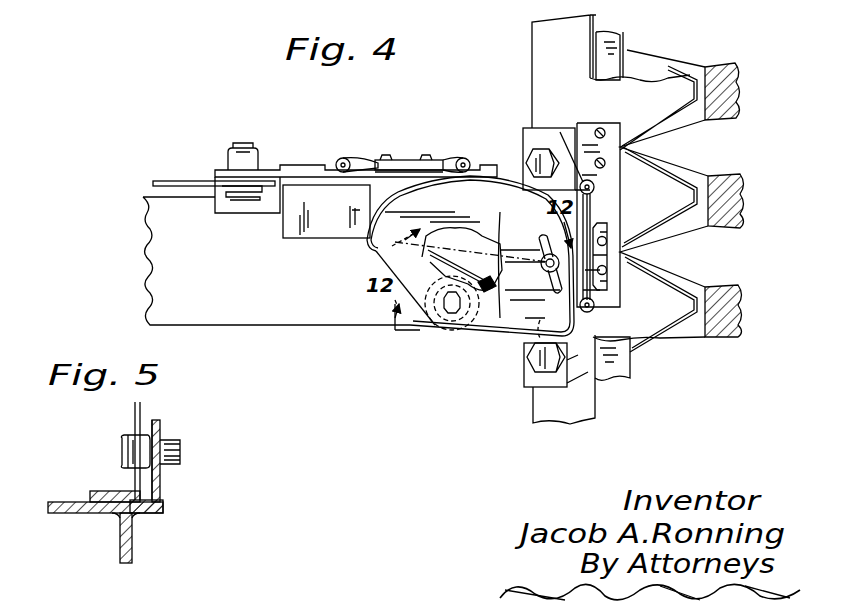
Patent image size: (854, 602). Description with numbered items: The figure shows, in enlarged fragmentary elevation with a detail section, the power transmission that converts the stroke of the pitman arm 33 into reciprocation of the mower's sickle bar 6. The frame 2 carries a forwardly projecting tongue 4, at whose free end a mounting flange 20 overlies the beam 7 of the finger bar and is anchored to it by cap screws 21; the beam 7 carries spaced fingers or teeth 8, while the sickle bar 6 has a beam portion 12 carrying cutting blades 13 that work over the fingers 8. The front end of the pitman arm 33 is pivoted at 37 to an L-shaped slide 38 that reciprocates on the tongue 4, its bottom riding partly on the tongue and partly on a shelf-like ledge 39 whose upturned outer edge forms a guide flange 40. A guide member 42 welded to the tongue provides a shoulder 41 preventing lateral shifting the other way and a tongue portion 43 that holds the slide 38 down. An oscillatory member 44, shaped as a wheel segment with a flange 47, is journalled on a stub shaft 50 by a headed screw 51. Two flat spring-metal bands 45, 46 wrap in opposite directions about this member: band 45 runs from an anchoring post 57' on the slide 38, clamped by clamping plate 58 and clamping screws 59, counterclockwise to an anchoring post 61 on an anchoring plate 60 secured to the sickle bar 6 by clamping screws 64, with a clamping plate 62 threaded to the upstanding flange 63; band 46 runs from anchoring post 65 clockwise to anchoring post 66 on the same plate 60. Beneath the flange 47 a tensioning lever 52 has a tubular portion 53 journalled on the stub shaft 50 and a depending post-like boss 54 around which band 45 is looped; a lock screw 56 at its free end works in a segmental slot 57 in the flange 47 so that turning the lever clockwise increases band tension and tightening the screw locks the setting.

In FIG. 5, the frame 2 is at (52, 513).
In FIG. 4, the frame tongue 4 is at (282, 298).
In FIG. 5, the frame tongue 4 is at (108, 505).
In FIG. 4, the sickle bar 6 is at (687, 68).
In FIG. 4, the beam 7 is at (546, 38).
In FIG. 4, the fingers or teeth 8 is at (737, 78).
In FIG. 4, the beam portion 12 is at (650, 392).
In FIG. 4, the cutting blades or teeth 13 is at (672, 320).
In FIG. 4, the mounting flange 20 is at (540, 376).
In FIG. 4, the cap screws 21 is at (545, 128).
In FIG. 4, the pitman arm 33 is at (202, 181).
In FIG. 4, the pivot 37 is at (232, 204).
In FIG. 5, the pivot 37 is at (174, 451).
In FIG. 4, the slide 38 is at (272, 165).
In FIG. 5, the slide 38 is at (160, 428).
In FIG. 5, the supporting ledge 39 is at (152, 512).
In FIG. 4, the guide flange 40 is at (313, 165).
In FIG. 5, the guide flange 40 is at (162, 497).
In FIG. 5, the shoulder 41 is at (92, 496).
In FIG. 4, the guide member 42 is at (305, 203).
In FIG. 5, the guide member 42 is at (96, 493).
In FIG. 5, the tongue portion 43 is at (130, 496).
In FIG. 4, the oscillatory member 44 is at (386, 248).
In FIG. 4, the flexible band 45 is at (352, 211).
In FIG. 4, the flexible band 46 is at (351, 160).
In FIG. 4, the flange 47 is at (437, 203).
In FIG. 4, the stub shaft 50 is at (432, 330).
In FIG. 4, the headed screw 51 is at (452, 312).
In FIG. 4, the tensioning lever 52 is at (502, 300).
In FIG. 4, the tubular portion 53 is at (464, 322).
In FIG. 4, the post-like boss 54 is at (494, 232).
In FIG. 4, the lock screw 56 is at (544, 257).
In FIG. 4, the segmental slot 57 is at (478, 270).
In FIG. 4, the anchoring post 57' is at (466, 147).
In FIG. 4, the clamping plate 58 is at (404, 160).
In FIG. 4, the clamping screws 59 is at (386, 156).
In FIG. 4, the anchoring plate 60 is at (608, 212).
In FIG. 4, the anchoring post 61 is at (568, 130).
In FIG. 4, the clamping plate 62 is at (622, 253).
In FIG. 4, the upstanding flange 63 is at (598, 205).
In FIG. 4, the clamping screws 64 is at (603, 161).
In FIG. 4, the anchoring post 65 is at (345, 158).
In FIG. 4, the anchoring post 66 is at (597, 310).